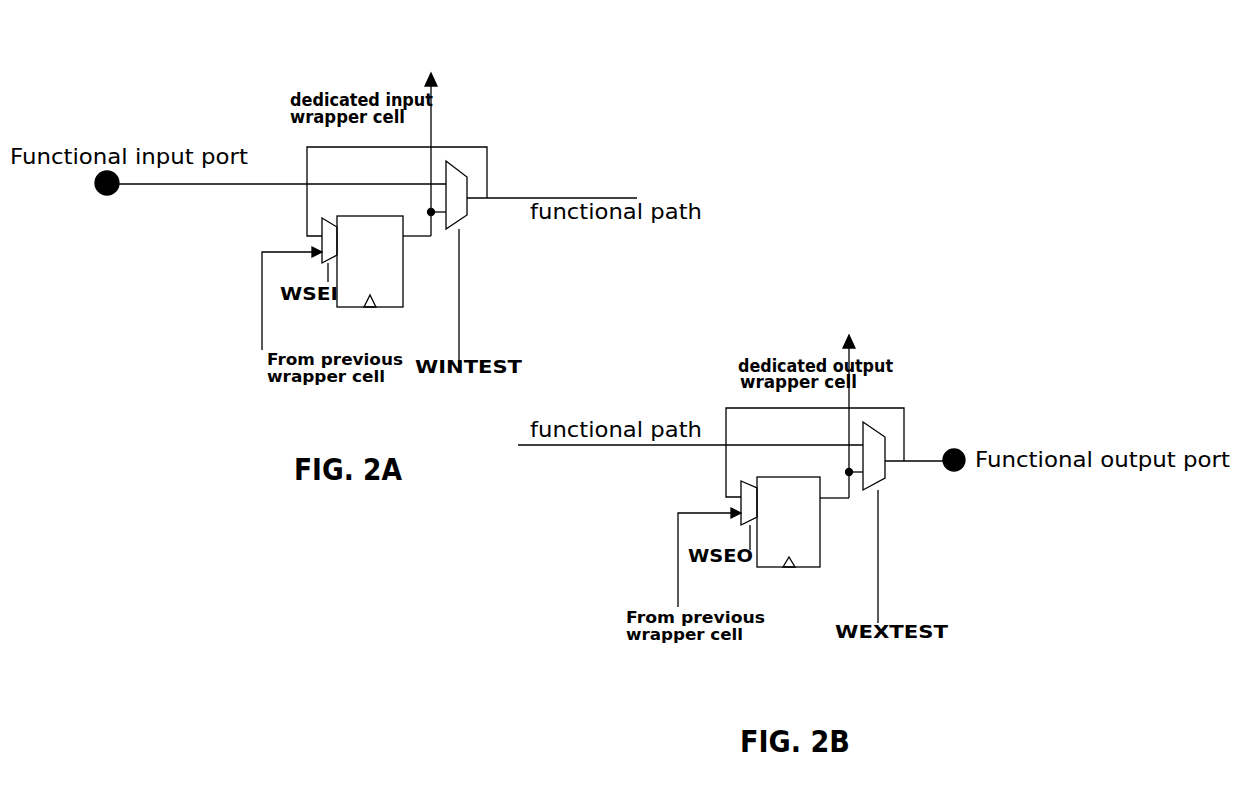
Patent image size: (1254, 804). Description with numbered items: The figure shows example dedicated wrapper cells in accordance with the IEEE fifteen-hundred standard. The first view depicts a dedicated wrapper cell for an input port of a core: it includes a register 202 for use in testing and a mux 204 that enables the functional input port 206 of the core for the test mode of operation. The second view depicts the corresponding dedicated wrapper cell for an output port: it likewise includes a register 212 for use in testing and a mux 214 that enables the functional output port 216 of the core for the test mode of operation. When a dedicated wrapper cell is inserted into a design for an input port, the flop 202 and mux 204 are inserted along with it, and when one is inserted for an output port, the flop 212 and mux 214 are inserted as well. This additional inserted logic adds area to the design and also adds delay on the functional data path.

In FIG. 2A, the register 202 is at (351, 299).
In FIG. 2A, the mux 204 is at (468, 170).
In FIG. 2A, the functional input port 206 is at (115, 200).
In FIG. 2B, the register 212 is at (780, 562).
In FIG. 2B, the mux 214 is at (883, 428).
In FIG. 2B, the functional output port 216 is at (977, 443).